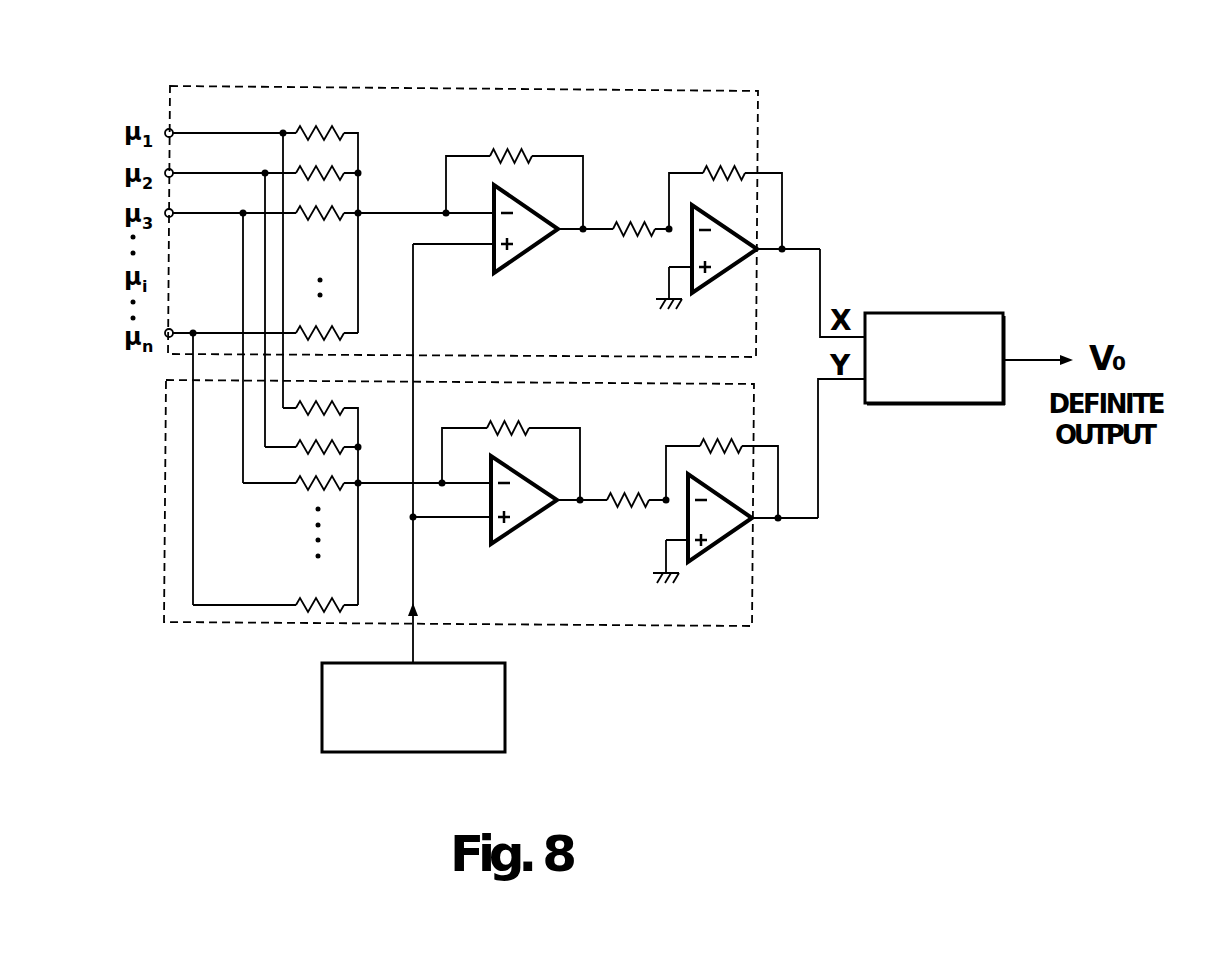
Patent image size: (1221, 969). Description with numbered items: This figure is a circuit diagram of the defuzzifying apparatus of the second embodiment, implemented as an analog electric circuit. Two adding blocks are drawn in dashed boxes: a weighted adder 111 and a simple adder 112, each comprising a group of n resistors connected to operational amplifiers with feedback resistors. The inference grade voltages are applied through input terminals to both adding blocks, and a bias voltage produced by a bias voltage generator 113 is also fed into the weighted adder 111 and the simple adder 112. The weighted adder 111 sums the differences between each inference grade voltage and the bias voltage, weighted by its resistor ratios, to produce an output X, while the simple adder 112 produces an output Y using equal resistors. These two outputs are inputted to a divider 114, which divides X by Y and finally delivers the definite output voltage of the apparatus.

The weighted adder 111 is at (613, 91).
The simple adder 112 is at (607, 625).
The bias voltage generator 113 is at (505, 705).
The divider 114 is at (930, 313).